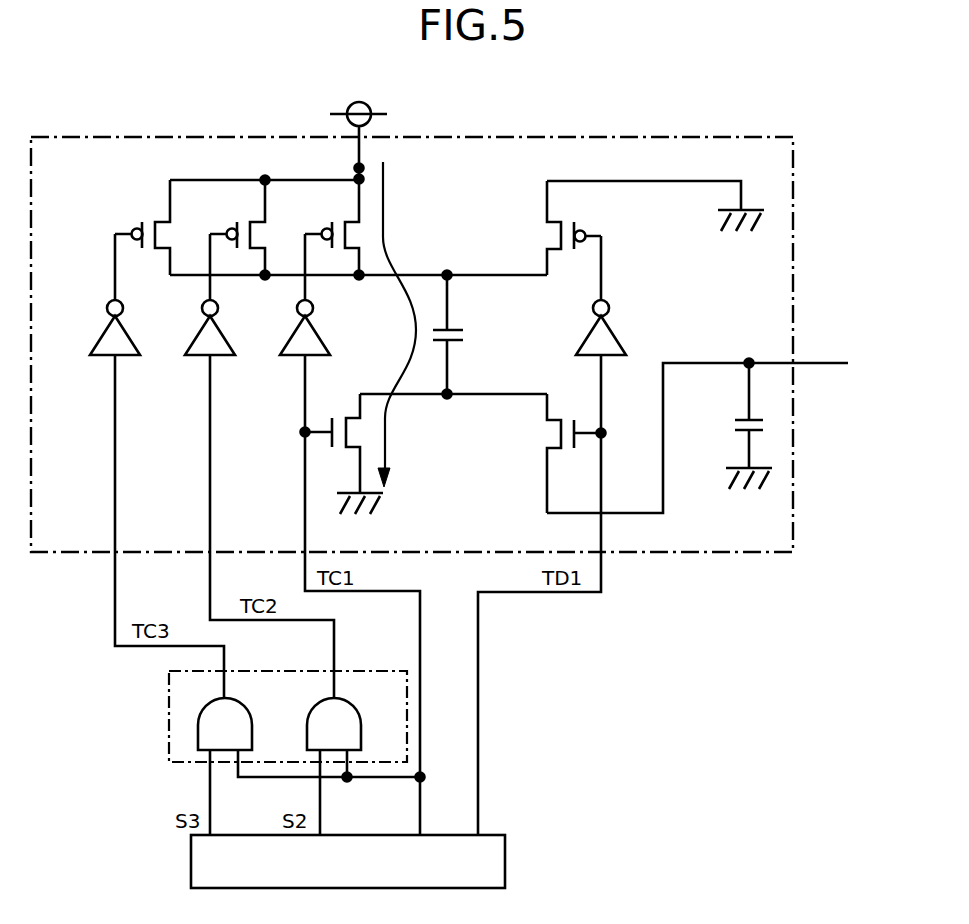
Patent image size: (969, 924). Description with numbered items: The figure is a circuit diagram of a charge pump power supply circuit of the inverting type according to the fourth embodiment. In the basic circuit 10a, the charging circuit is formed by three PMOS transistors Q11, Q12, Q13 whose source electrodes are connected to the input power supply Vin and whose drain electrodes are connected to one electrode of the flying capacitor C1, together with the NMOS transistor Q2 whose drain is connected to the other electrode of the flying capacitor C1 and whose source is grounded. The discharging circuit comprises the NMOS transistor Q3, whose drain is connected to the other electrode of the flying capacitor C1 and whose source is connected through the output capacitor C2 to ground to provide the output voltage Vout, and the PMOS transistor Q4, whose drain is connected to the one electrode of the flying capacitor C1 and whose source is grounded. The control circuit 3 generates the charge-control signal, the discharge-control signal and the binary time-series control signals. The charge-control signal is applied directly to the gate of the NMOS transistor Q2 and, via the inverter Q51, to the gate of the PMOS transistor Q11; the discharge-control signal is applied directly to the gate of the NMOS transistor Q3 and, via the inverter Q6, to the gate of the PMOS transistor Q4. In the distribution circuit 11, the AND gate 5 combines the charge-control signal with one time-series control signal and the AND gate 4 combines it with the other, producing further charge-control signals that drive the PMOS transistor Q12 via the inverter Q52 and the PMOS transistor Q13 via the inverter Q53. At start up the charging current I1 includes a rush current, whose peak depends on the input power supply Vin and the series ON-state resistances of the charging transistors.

The basic circuit 10a is at (511, 137).
The distribution circuit 11 is at (168, 719).
The AND gate 4 is at (244, 706).
The AND gate 5 is at (354, 706).
The control circuit 3 is at (505, 855).
The PMOS transistor Q13 is at (136, 227).
The PMOS transistor Q12 is at (234, 227).
The PMOS transistor Q11 is at (328, 227).
The inverter Q53 is at (145, 466).
The inverter Q52 is at (248, 466).
The inverter Q51 is at (341, 534).
The NMOS transistor Q2 is at (353, 454).
The NMOS transistor Q3 is at (678, 438).
The PMOS transistor Q4 is at (655, 228).
The inverter Q6 is at (565, 535).
The flying capacitor C1 is at (429, 334).
The output capacitor C2 is at (735, 424).
The charging current I1 is at (397, 324).
The input power supply Vin is at (358, 128).
The output voltage Vout is at (882, 365).